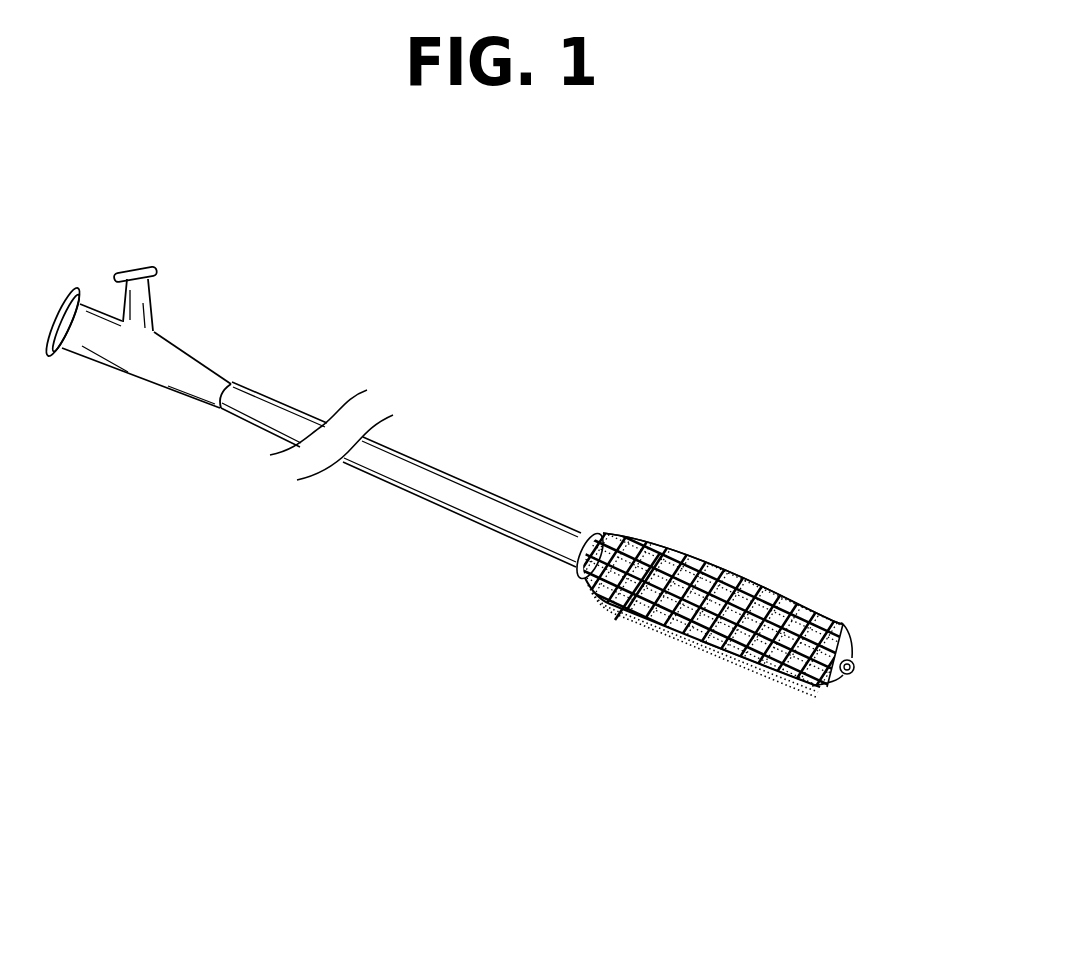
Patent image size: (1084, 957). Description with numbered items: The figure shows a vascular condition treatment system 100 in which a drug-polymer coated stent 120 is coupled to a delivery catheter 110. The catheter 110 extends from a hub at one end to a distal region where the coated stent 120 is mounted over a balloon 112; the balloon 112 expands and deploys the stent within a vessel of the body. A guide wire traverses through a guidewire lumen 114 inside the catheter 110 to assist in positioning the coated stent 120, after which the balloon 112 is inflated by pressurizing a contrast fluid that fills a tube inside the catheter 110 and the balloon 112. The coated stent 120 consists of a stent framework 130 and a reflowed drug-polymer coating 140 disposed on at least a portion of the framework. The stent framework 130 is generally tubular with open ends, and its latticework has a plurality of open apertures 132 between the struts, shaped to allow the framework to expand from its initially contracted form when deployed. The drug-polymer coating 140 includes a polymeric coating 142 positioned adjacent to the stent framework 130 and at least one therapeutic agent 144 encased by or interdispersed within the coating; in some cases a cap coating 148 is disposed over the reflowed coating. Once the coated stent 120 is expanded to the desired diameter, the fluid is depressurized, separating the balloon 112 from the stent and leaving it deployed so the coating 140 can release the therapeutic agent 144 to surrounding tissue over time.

The vascular condition treatment system 100 is at (113, 192).
The delivery catheter 110 is at (277, 400).
The balloon 112 is at (849, 677).
The guidewire lumen 114 is at (853, 658).
The drug-polymer coated stent 120 is at (673, 547).
The stent framework 130 is at (730, 573).
The open apertures 132 is at (637, 613).
The reflowed drug-polymer coating 140 is at (797, 597).
The polymeric coating 142 is at (720, 657).
The therapeutic agent 144 is at (760, 667).
The cap coating 148 is at (790, 677).